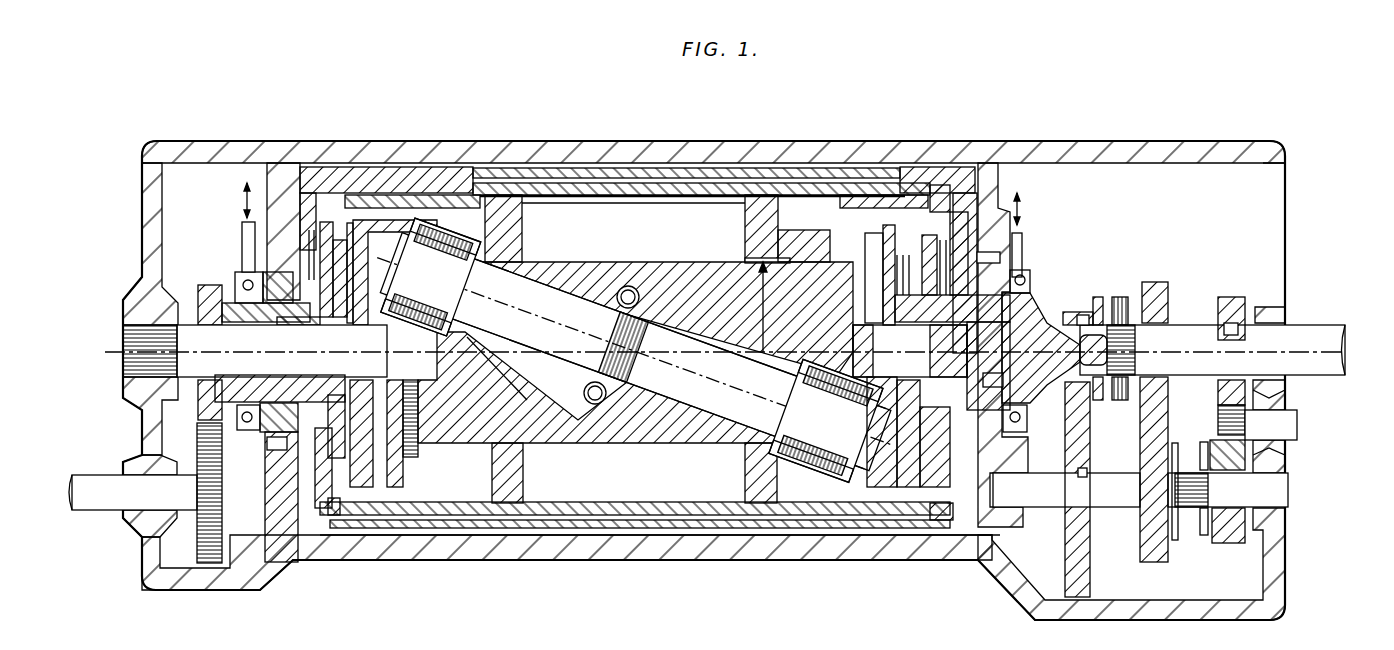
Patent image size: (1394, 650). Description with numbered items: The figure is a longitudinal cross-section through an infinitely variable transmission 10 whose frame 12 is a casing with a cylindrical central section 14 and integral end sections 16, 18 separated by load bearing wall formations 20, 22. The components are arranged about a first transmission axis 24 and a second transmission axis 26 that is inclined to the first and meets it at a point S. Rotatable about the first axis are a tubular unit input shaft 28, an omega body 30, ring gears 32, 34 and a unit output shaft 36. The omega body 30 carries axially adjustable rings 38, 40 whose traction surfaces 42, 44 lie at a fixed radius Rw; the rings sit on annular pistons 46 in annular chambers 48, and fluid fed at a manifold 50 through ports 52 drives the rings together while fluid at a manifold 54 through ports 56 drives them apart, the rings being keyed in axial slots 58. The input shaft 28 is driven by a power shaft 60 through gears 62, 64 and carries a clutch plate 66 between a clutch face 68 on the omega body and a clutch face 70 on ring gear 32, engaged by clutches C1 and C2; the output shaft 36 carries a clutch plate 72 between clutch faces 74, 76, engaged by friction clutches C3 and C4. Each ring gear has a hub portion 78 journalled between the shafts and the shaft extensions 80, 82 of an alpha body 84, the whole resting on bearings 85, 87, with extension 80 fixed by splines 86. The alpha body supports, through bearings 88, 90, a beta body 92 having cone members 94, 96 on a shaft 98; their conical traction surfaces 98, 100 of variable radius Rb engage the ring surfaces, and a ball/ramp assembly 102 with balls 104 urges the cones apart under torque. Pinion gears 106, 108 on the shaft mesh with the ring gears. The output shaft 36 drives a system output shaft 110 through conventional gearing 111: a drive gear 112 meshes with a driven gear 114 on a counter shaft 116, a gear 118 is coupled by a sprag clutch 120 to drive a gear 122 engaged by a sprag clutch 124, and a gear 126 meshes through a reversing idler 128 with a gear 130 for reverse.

The I.V. transmission 10 is at (727, 125).
The frame 12 is at (1005, 132).
The central casing section 14 is at (575, 150).
The end section 16 is at (190, 150).
The end section 18 is at (1222, 160).
The load bearing wall formation 20 is at (273, 182).
The load bearing wall formation 22 is at (1000, 178).
The first transmission axis 24 is at (1343, 352).
The second transmission axis 26 is at (512, 306).
The unit input shaft 28 is at (237, 280).
The omega body 30 is at (625, 162).
The ring gear 32 is at (420, 440).
The ring gear 34 is at (830, 262).
The unit output shaft 36 is at (1025, 305).
The axially adjustable ring 38 is at (522, 236).
The axially adjustable ring 40 is at (745, 220).
The traction surface 42 is at (523, 450).
The traction surface 44 is at (745, 262).
The annular piston 46 is at (412, 167).
The annular chamber 48 is at (398, 520).
The manifold 50 is at (242, 250).
The port 52 is at (335, 515).
The manifold 54 is at (1022, 270).
The port 56 is at (488, 167).
The axial slot 58 is at (555, 203).
The power shaft 60 is at (107, 475).
The gear 62 is at (225, 487).
The gear 64 is at (190, 412).
The clutch plate 66 is at (340, 240).
The clutch face 68 is at (345, 290).
The clutch face 70 is at (383, 325).
The clutch plate 72 is at (937, 185).
The clutch face 74 is at (925, 235).
The clutch face 76 is at (957, 212).
The hub portion 78 is at (290, 322).
The shaft extension 80 is at (220, 346).
The shaft extension 82 is at (906, 343).
The alpha body 84 is at (444, 405).
The bearing 85 is at (267, 448).
The splines 86 is at (125, 335).
The bearing 87 is at (1023, 452).
The bearing 88 is at (472, 195).
The bearing 90 is at (745, 484).
The beta body 92 is at (612, 250).
The cone member 94 is at (567, 283).
The cone member 96 is at (689, 328).
The shaft 98 is at (557, 262).
The traction surface 100 is at (690, 443).
The ball/ramp assembly 102 is at (596, 405).
The balls 104 is at (617, 303).
The pinion gear 106 is at (430, 272).
The pinion gear 108 is at (850, 390).
The system output shaft 110 is at (1255, 347).
The conventional gearing 111 is at (1190, 248).
The drive gear 112 is at (1085, 312).
The driven gear 114 is at (1070, 432).
The counter shaft 116 is at (1105, 498).
The gear 118 is at (1152, 545).
The sprag clutch 120 is at (1190, 540).
The gear 122 is at (1153, 282).
The sprag clutch 124 is at (1100, 297).
The gear 126 is at (1240, 545).
The reversing idler 128 is at (1290, 428).
The gear 130 is at (1232, 297).
The clutch C1 is at (322, 222).
The clutch C2 is at (360, 223).
The friction clutch C3 is at (880, 333).
The friction clutch C4 is at (945, 312).
The point of axes intersection S is at (640, 310).
The ring traction surface radius Rw is at (765, 302).
The cone traction surface radius Rb is at (760, 425).